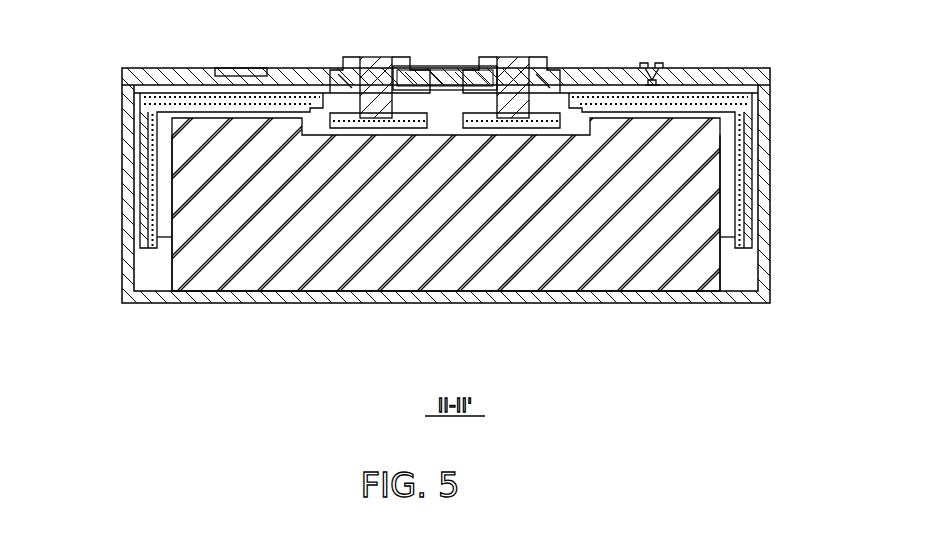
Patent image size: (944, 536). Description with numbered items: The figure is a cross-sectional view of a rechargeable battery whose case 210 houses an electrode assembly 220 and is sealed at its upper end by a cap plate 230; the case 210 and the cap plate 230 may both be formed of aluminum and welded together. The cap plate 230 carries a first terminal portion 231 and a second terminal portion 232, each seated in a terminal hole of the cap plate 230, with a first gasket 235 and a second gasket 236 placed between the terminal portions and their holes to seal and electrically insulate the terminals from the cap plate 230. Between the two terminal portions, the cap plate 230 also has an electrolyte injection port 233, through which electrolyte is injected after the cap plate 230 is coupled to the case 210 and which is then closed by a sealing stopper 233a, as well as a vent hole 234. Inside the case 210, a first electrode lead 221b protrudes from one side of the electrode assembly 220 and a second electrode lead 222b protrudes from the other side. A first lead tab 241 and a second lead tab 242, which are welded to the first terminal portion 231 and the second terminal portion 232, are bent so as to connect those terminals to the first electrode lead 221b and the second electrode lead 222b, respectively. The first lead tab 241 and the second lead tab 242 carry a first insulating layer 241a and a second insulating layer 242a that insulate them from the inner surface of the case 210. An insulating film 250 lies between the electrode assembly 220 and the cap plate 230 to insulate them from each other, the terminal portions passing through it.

The case 210 is at (129, 262).
The electrode assembly 220 is at (412, 264).
The first electrode lead 221b is at (162, 228).
The second electrode lead 222b is at (726, 228).
The cap plate 230 is at (181, 68).
The first terminal portion 231 is at (368, 70).
The second terminal portion 232 is at (508, 70).
The electrolyte injection port 233 is at (650, 68).
The sealing stopper 233a is at (655, 68).
The vent hole 234 is at (243, 68).
The first gasket 235 is at (342, 66).
The second gasket 236 is at (560, 62).
The first lead tab 241 is at (144, 184).
The first insulating layer 241a is at (152, 150).
The second lead tab 242 is at (746, 203).
The second insulating layer 242a is at (748, 165).
The insulating film 250 is at (443, 66).